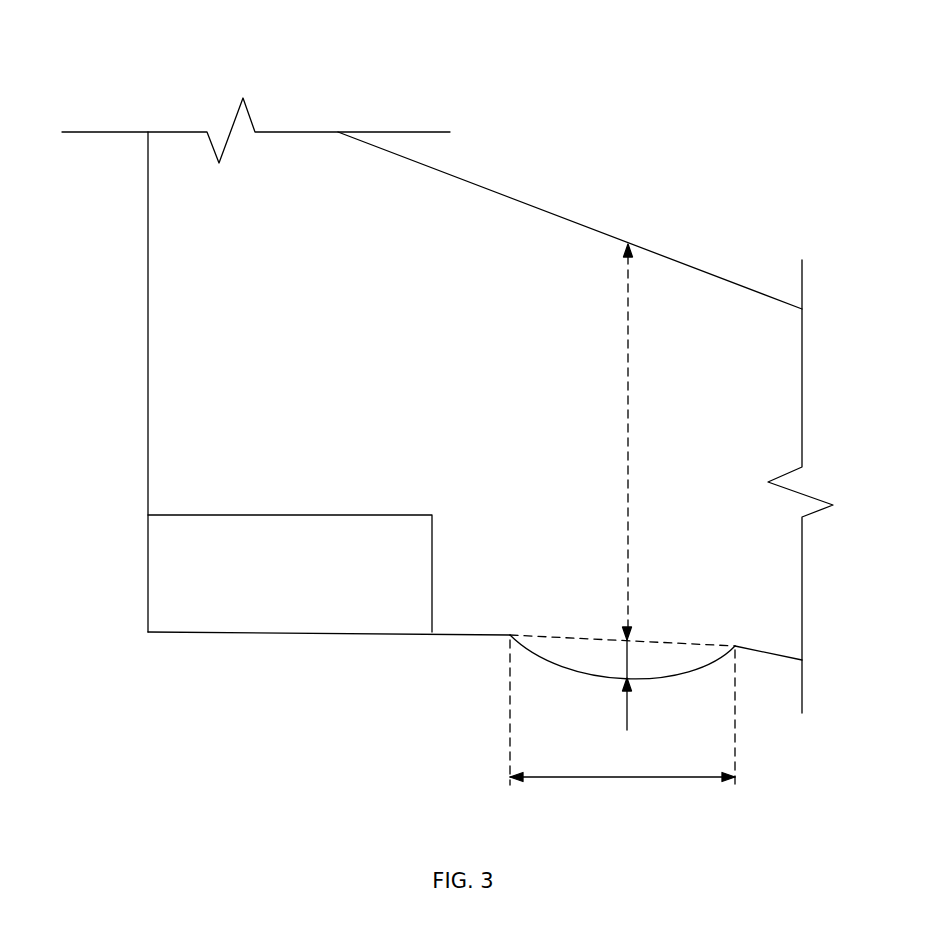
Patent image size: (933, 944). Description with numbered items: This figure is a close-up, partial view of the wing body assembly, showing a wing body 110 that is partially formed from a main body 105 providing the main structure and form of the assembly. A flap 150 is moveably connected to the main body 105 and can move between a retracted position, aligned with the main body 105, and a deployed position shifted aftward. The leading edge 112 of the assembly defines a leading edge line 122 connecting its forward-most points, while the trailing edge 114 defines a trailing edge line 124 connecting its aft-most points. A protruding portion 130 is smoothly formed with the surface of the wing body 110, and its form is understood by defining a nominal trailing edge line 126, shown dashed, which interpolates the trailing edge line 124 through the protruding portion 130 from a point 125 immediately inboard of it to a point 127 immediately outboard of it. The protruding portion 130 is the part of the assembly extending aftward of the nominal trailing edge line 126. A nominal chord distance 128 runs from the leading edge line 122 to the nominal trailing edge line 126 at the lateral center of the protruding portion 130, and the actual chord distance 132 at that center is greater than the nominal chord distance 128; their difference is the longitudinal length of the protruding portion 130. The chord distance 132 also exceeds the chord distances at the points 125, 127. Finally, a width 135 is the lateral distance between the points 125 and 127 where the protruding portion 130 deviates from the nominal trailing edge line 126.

The main body 105 is at (253, 347).
The wing body 110 is at (753, 128).
The leading edge 112 is at (570, 208).
The leading edge line 122 is at (582, 212).
The trailing edge 114 is at (329, 679).
The trailing edge line 124 is at (327, 648).
The point on the trailing edge line inboard of the protruding portion 125 is at (500, 650).
The nominal trailing edge line 126 is at (672, 630).
The point on the trailing edge line outboard of the protruding portion 127 is at (743, 635).
The nominal chord distance 128 is at (634, 297).
The protruding portion 130 is at (677, 690).
The chord distance 132 is at (618, 658).
The width 135 is at (617, 779).
The flap 150 is at (253, 584).